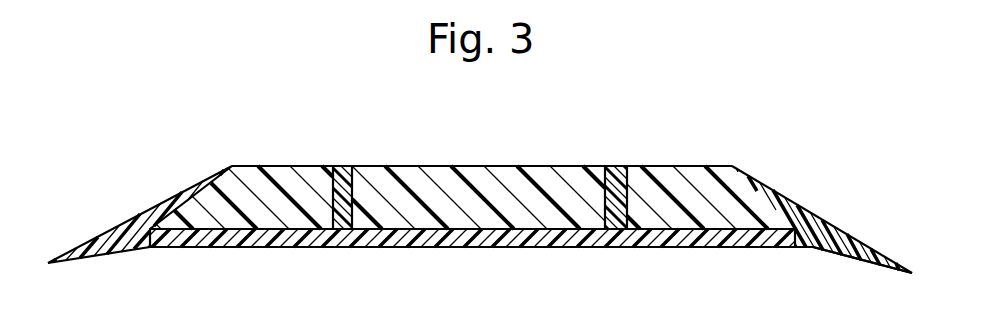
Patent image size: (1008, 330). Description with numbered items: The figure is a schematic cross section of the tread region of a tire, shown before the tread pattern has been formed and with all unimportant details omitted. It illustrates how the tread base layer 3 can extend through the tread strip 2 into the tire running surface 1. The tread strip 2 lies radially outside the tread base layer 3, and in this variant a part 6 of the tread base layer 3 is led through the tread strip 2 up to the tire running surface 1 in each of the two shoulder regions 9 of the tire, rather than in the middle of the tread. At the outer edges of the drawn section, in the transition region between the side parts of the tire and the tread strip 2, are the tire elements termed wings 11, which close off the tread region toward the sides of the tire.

The tire running surface 1 is at (432, 158).
The tread strip 2 is at (500, 188).
The tread base layer 3 is at (470, 248).
The part of the tread base layer 6 is at (333, 193).
The shoulder regions 9 is at (342, 158).
The wings 11 is at (177, 200).